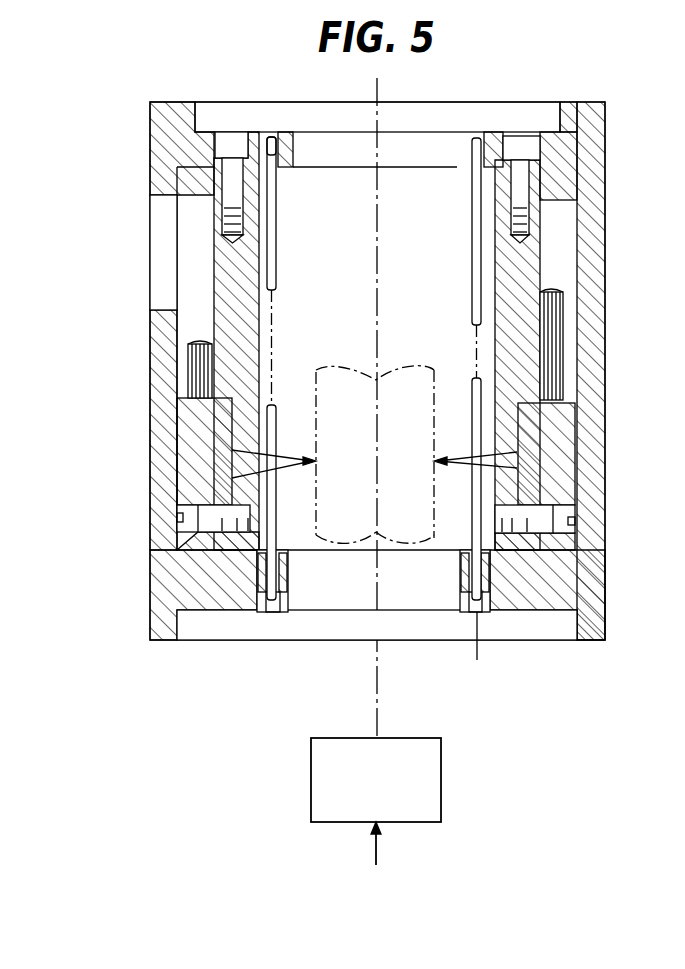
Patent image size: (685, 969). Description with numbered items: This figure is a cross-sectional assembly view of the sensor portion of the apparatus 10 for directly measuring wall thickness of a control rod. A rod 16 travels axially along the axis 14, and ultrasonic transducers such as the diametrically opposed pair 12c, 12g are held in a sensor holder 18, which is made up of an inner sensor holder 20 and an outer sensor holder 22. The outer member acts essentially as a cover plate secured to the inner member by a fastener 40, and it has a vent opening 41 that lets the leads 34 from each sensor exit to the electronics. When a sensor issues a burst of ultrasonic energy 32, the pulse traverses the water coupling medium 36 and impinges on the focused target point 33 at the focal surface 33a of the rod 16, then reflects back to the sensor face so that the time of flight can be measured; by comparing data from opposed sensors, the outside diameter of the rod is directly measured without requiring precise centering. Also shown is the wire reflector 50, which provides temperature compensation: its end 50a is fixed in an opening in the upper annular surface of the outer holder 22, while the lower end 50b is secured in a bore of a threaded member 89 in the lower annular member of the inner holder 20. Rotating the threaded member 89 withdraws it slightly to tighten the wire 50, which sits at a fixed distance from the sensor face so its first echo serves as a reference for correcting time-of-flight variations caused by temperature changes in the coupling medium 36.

The apparatus for directly measuring wall thickness of a control rod 10 is at (608, 110).
The ultrasonic transducer 12c is at (572, 450).
The ultrasonic transducer 12g is at (176, 447).
The axis 14 is at (380, 97).
The rod 16 is at (349, 356).
The sensor holder 18 is at (132, 606).
The inner sensor holder 20 is at (162, 641).
The outer sensor holder 22 is at (150, 517).
The bursts of ultrasonic energy 32 is at (284, 456).
The focused target point 33 is at (437, 458).
The focal surface 33a is at (415, 368).
The leads 34 is at (192, 350).
The water coupling medium 36 is at (341, 263).
The fastener 40 is at (520, 146).
The vent opening 41 is at (158, 240).
The wire reflector 50 is at (282, 228).
The end of wire reflector 50a is at (277, 136).
The lower end of wire reflector 50b is at (268, 638).
The threaded member 89 is at (486, 641).